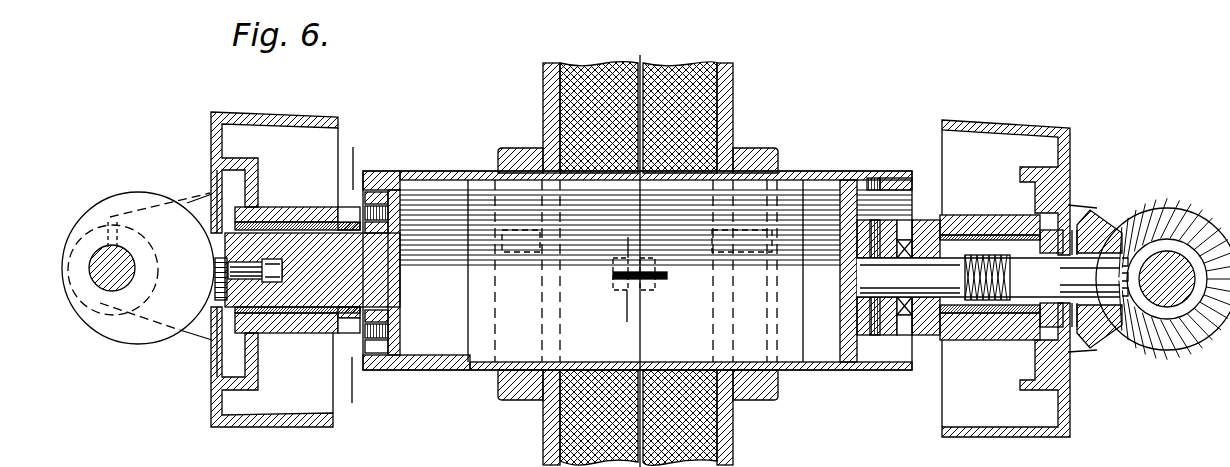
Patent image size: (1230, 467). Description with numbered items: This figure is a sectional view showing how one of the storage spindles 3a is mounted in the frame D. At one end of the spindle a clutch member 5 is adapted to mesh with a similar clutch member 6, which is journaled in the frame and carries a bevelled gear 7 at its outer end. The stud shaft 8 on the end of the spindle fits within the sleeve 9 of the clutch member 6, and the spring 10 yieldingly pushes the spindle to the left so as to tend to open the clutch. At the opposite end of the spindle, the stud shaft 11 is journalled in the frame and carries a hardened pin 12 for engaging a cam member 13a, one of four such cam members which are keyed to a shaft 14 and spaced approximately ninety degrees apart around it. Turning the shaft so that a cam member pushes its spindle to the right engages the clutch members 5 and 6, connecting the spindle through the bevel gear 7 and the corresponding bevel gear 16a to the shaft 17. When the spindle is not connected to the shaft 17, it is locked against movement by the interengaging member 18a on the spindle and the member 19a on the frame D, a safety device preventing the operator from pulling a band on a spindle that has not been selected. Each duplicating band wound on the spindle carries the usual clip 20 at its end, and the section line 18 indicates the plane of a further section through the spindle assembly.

The frame D is at (266, 112).
The cam member 13a is at (136, 205).
The shaft 14 is at (100, 290).
The hardened pin 12 is at (207, 330).
The stud shaft 11 is at (310, 300).
The interengaging member 19a is at (340, 328).
The section line 18 is at (360, 148).
The interengaging member 18a is at (388, 315).
The spindle 3a is at (733, 448).
The clip 20 is at (630, 237).
The clutch member 5 is at (885, 335).
The clutch member 6 is at (927, 225).
The stud shaft 8 is at (948, 268).
The sleeve 9 is at (966, 318).
The spring 10 is at (988, 263).
The bevelled gear 7 is at (1098, 337).
The bevel gear 16a is at (1163, 338).
The shaft 17 is at (1167, 262).